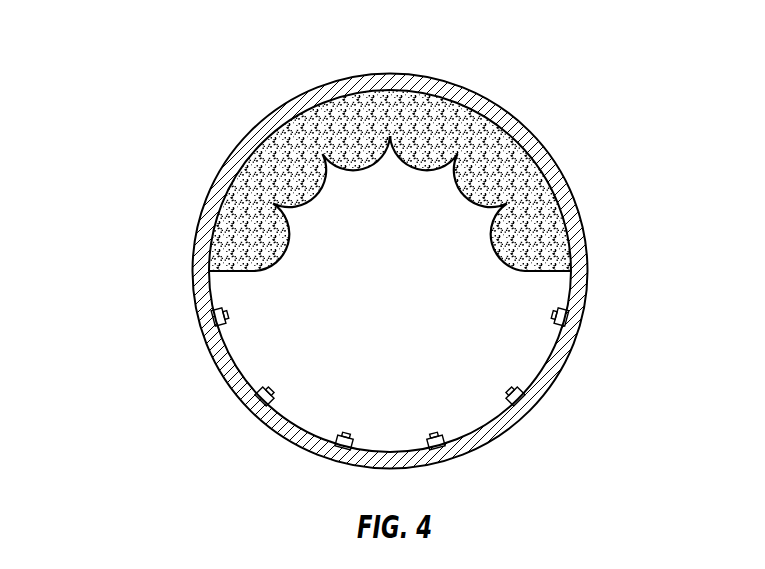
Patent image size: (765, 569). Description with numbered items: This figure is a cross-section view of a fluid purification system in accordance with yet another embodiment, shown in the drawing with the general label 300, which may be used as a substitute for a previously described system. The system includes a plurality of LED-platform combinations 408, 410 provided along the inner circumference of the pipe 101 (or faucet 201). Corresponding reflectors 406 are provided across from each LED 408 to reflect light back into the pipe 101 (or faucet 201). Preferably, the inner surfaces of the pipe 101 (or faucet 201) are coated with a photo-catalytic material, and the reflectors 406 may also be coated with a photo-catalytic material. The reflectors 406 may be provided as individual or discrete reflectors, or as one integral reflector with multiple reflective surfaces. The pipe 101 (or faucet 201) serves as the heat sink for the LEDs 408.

The pipe assembly 300 is at (175, 52).
The pipe 101 is at (382, 270).
The faucet 201 is at (382, 270).
The reflector 406 is at (452, 146).
The LED 408 is at (508, 393).
The platform 410 is at (472, 88).